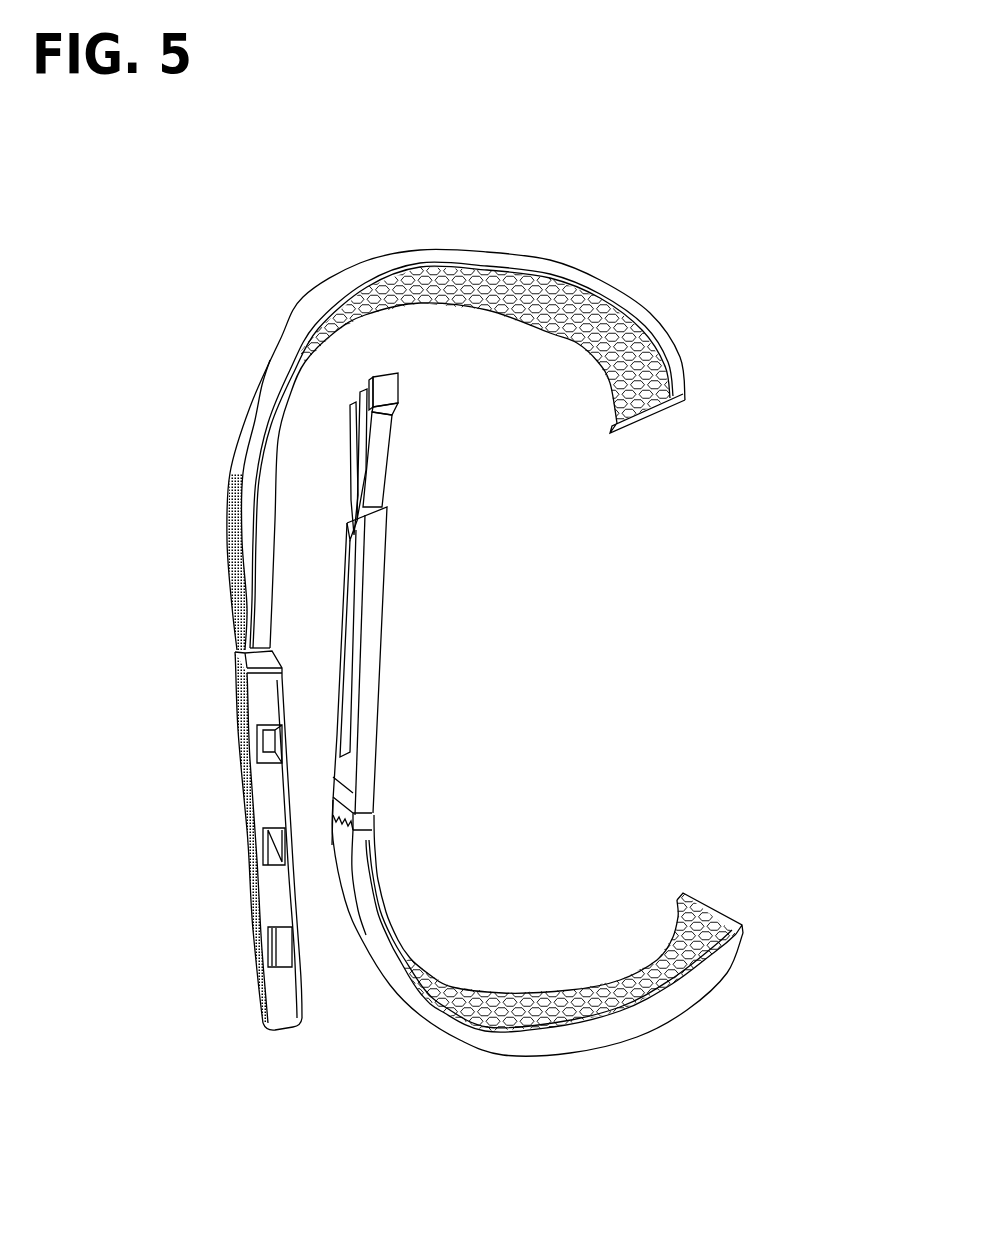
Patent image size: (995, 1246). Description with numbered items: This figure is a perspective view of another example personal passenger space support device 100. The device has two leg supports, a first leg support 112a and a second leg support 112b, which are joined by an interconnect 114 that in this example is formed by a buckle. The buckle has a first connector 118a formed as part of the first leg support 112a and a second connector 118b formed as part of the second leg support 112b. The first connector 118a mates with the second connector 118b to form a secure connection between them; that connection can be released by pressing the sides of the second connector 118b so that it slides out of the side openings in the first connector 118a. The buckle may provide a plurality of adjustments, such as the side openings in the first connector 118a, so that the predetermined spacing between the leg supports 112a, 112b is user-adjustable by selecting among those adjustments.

The personal passenger space support device 100 is at (683, 237).
The first leg support 112a is at (393, 252).
The second leg support 112b is at (378, 886).
The interconnect 114 is at (447, 496).
The first connector 118a is at (243, 703).
The second connector 118b is at (385, 450).